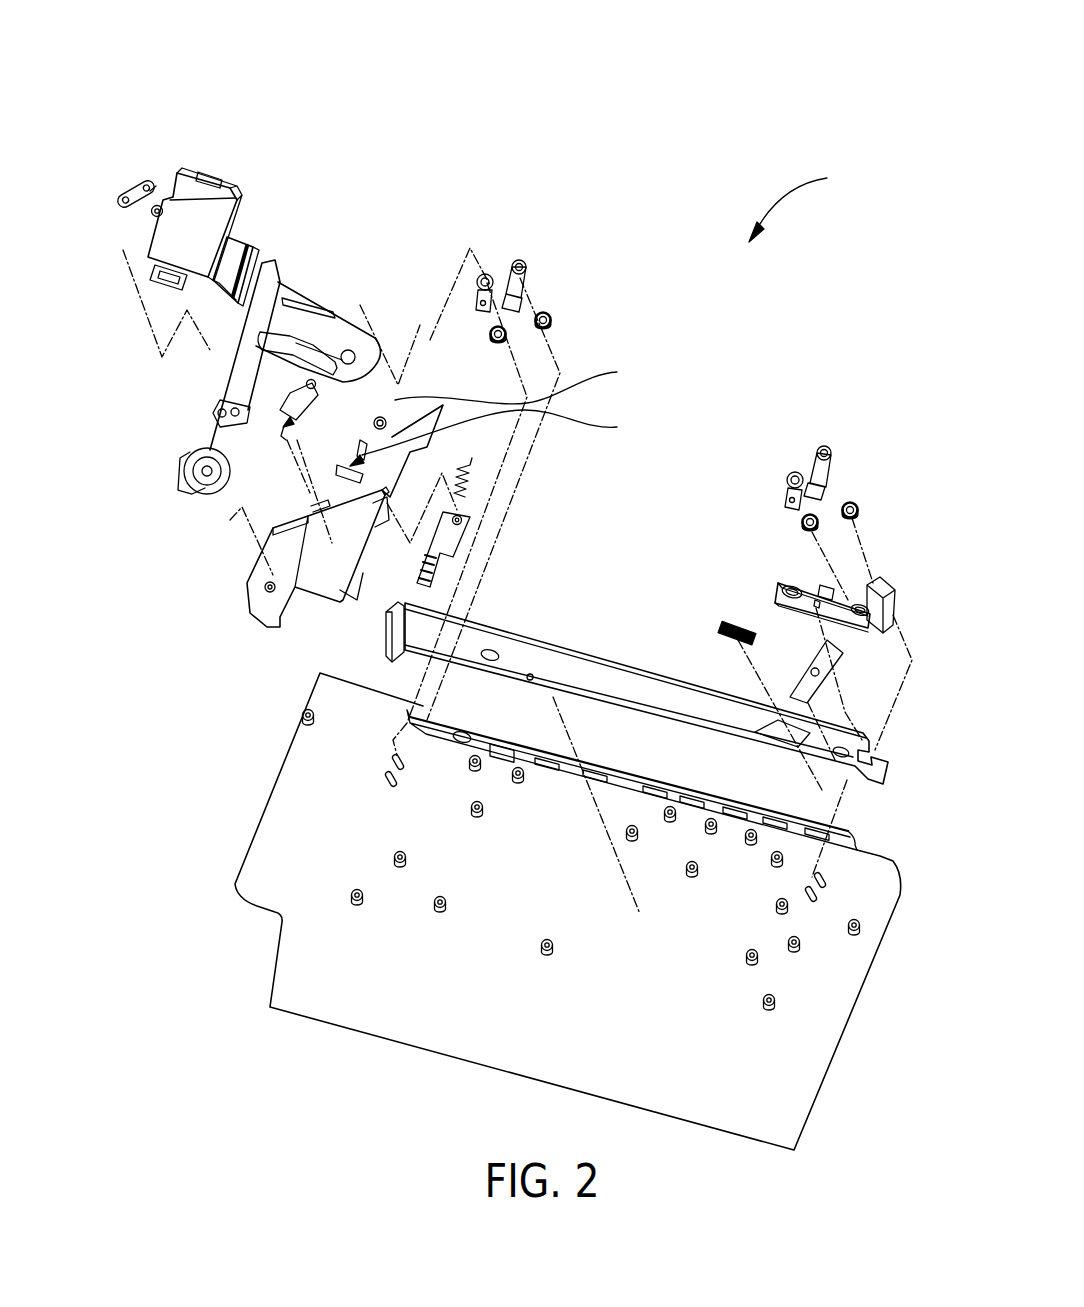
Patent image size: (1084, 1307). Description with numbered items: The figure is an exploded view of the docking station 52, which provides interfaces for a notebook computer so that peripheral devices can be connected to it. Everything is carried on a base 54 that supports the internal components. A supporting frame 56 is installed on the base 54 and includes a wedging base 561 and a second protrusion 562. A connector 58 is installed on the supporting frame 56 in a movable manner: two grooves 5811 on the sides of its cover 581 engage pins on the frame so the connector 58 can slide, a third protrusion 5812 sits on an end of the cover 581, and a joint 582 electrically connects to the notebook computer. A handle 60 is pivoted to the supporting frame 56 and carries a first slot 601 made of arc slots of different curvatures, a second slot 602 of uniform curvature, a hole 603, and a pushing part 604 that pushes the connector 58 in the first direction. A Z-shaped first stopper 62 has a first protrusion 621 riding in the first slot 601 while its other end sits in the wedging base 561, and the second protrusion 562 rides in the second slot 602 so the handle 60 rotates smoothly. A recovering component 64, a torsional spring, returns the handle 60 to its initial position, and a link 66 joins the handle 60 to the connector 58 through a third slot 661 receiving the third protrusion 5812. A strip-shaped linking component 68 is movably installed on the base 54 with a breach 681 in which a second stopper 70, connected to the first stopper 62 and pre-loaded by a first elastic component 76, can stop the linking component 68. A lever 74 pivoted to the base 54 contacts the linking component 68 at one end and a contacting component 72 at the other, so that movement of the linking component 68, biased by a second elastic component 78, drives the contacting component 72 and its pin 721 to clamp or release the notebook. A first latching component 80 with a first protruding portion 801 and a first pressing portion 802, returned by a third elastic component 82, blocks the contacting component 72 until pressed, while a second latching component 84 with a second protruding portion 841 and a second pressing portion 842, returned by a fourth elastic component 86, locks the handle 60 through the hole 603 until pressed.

The docking station 52 is at (801, 203).
The base 54 is at (485, 1077).
The supporting frame 56 is at (533, 424).
The wedging base 561 is at (507, 432).
The second protrusion 562 is at (525, 380).
The connector 58 is at (279, 157).
The cover 581 is at (248, 171).
The grooves 5811 is at (178, 268).
The third protrusion 5812 is at (182, 160).
The joint 582 is at (225, 240).
The handle 60 is at (328, 318).
The first slot 601 is at (348, 299).
The second slot 602 is at (305, 304).
The hole 603 is at (353, 349).
The pushing part 604 is at (289, 290).
The first stopper 62 is at (270, 437).
The first protrusion 621 is at (288, 412).
The recovering component 64 is at (210, 493).
The link 66 is at (130, 146).
The third slot 661 is at (150, 190).
The linking component 68 is at (600, 682).
The breach 681 is at (392, 643).
The second stopper 70 is at (432, 547).
The contacting component 72 is at (805, 576).
The pin 721 is at (872, 585).
The lever 74 is at (818, 657).
The first elastic component 76 is at (474, 470).
The second elastic component 78 is at (728, 628).
The first latching component 80 is at (803, 442).
The first protruding portion 801 is at (787, 498).
The first pressing portion 802 is at (830, 485).
The third elastic component 82 is at (802, 520).
The second latching component 84 is at (545, 252).
The second protruding portion 841 is at (487, 275).
The second pressing portion 842 is at (517, 296).
The fourth elastic component 86 is at (551, 320).